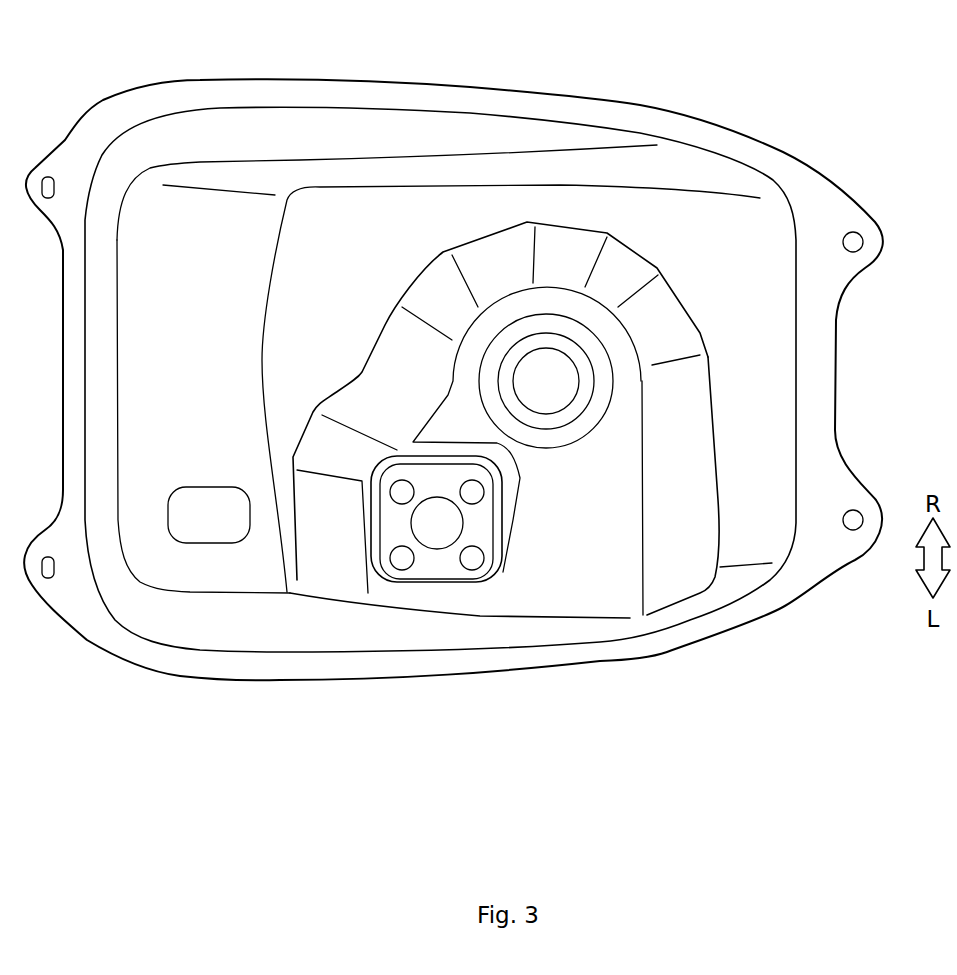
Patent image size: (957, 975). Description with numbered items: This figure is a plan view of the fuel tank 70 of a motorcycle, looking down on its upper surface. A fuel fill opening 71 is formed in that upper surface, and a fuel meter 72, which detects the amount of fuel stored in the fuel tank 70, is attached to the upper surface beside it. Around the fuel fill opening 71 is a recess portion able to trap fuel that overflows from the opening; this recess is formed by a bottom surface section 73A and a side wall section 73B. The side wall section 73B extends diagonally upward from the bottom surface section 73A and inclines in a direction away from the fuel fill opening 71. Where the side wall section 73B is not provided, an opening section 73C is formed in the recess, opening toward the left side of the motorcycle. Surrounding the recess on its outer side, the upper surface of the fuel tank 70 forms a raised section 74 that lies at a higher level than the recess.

The fuel tank 70 is at (723, 92).
The fuel fill opening 71 is at (548, 372).
The fuel meter 72 is at (432, 562).
The bottom surface section 73A is at (572, 583).
The side wall section 73B is at (670, 562).
The opening section 73C is at (479, 616).
The raised section 74 is at (760, 425).